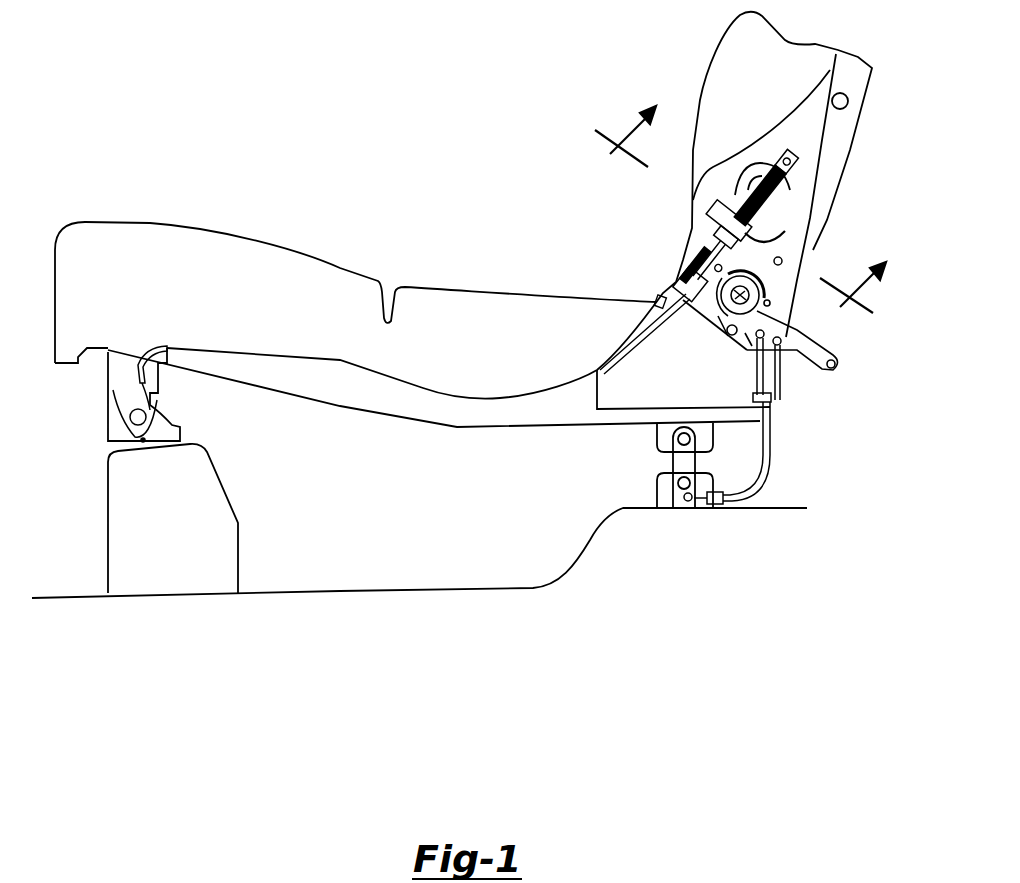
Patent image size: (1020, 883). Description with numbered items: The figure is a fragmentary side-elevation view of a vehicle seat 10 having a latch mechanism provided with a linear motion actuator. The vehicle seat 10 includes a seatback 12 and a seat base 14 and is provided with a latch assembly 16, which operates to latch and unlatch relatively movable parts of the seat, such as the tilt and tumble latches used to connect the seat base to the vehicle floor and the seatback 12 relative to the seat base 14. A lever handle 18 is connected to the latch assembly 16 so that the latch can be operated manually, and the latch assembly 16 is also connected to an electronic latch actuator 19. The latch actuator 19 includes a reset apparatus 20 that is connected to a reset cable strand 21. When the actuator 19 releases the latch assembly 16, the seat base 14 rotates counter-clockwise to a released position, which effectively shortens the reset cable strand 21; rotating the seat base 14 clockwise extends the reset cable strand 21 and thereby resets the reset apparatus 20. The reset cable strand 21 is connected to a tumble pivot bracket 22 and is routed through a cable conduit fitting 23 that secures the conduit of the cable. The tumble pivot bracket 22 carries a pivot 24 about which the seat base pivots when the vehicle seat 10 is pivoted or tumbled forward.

The vehicle seat 10 is at (237, 80).
The seatback 12 is at (738, 52).
The seat base 14 is at (117, 236).
The latch assembly 16 is at (680, 460).
The lever handle 18 is at (828, 372).
The electronic latch actuator 19 is at (707, 222).
The reset apparatus 20 is at (686, 286).
The reset cable strand 21 is at (423, 388).
The tumble pivot bracket 22 is at (117, 447).
The cable conduit fitting 23 is at (150, 349).
The pivot 24 is at (112, 389).